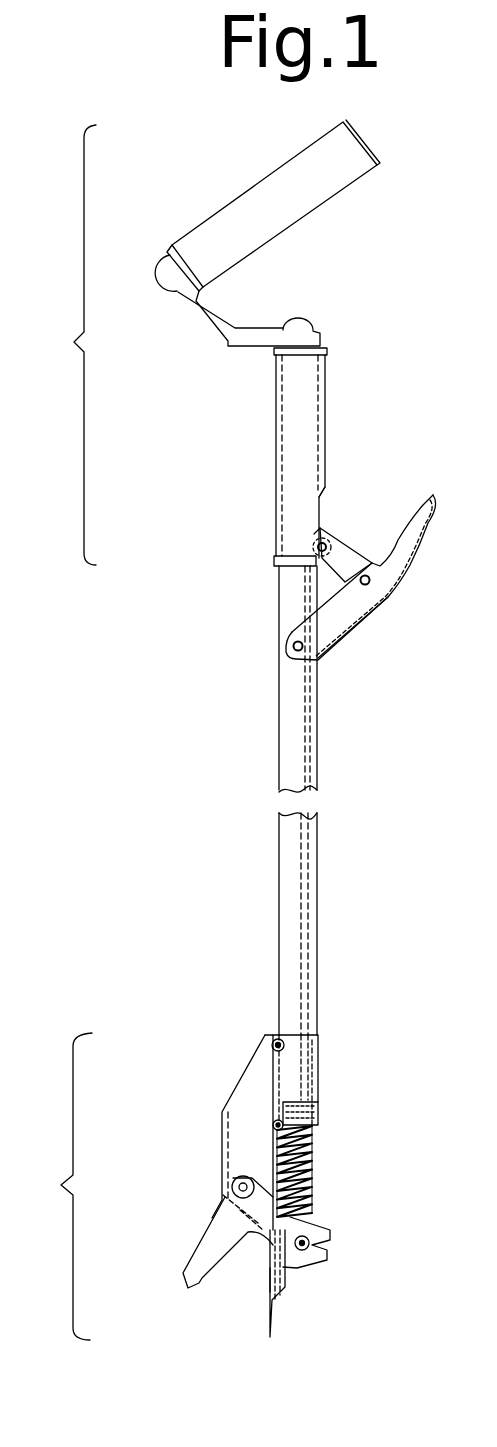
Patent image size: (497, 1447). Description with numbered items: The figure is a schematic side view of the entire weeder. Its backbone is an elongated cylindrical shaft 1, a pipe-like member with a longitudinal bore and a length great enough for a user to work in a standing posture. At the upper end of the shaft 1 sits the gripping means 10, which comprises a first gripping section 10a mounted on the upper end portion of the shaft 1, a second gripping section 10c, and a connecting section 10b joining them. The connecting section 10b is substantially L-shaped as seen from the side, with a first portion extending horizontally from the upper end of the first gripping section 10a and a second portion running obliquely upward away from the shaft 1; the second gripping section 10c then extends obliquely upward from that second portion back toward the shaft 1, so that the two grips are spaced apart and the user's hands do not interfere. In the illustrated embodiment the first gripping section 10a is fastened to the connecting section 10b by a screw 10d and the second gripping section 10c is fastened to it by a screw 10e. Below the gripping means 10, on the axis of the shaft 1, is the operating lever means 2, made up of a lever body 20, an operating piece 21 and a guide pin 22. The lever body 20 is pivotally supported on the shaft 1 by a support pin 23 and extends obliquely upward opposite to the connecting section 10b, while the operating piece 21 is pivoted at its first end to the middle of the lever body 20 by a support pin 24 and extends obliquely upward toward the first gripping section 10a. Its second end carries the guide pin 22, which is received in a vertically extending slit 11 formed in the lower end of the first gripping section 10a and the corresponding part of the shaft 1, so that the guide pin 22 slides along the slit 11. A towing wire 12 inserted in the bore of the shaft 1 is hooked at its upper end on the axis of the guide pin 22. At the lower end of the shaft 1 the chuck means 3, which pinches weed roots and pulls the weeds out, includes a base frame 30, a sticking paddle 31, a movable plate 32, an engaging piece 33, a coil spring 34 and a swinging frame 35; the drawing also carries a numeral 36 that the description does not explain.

The elongated cylindrical shaft 1 is at (317, 866).
The operating lever means 2 is at (378, 613).
The chuck means 3 is at (63, 1186).
The gripping means 10 is at (62, 345).
The first gripping section 10a is at (323, 388).
The connecting section 10b is at (228, 347).
The second gripping section 10c is at (246, 208).
The screw 10d is at (302, 320).
The screw 10e is at (162, 268).
The vertically extending slit 11 is at (318, 513).
The towing wire 12 is at (302, 765).
The lever body 20 is at (332, 635).
The operating piece 21 is at (368, 558).
The guide pin 22 is at (342, 532).
The support pin 23 is at (290, 644).
The support pin 24 is at (386, 597).
The base frame 30 is at (320, 1070).
The sticking paddle 31 is at (277, 1328).
The movable plate 32 is at (272, 1159).
The engaging piece 33 is at (330, 1255).
The coil spring 34 is at (315, 1181).
The swinging frame 35 is at (205, 1233).
The cutting edge 36 is at (267, 1280).